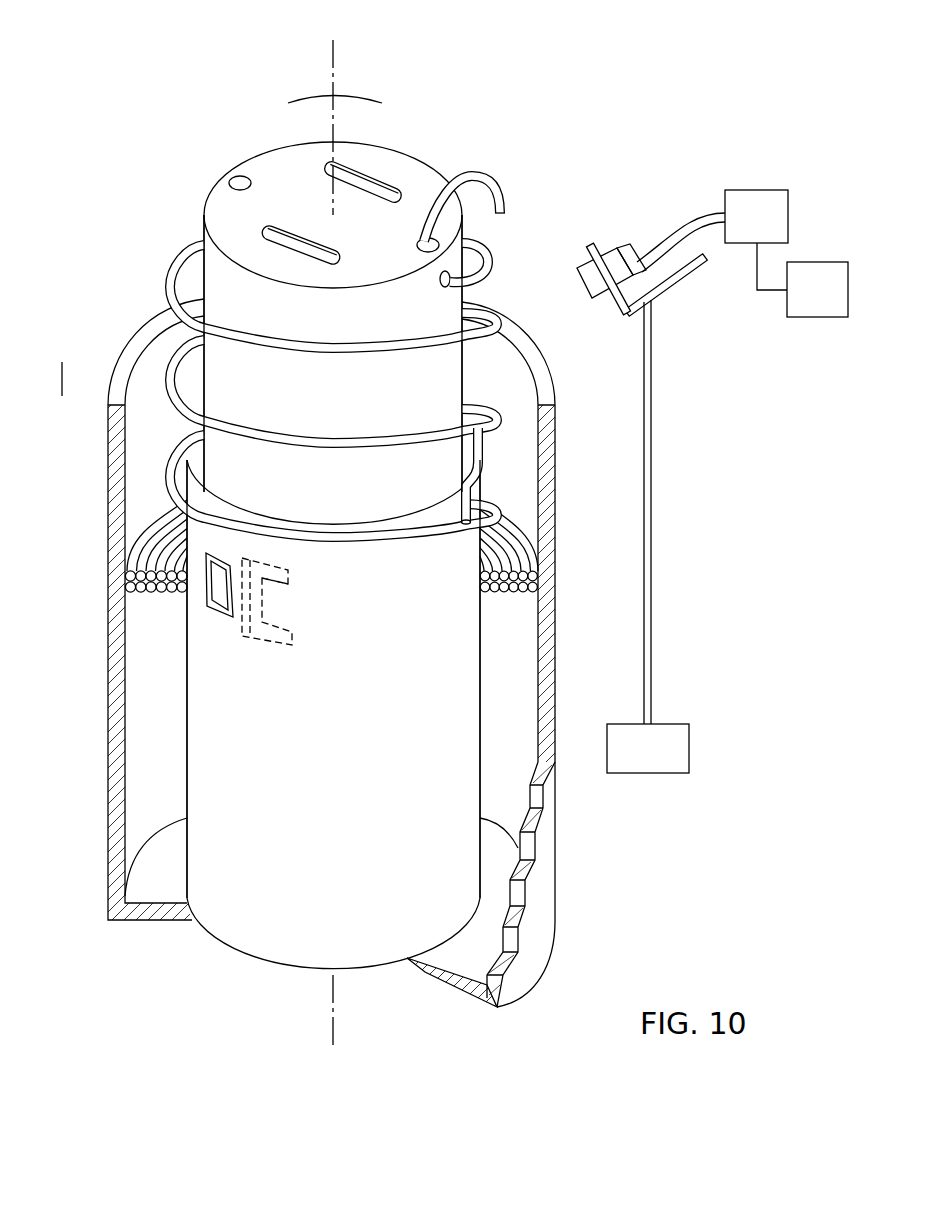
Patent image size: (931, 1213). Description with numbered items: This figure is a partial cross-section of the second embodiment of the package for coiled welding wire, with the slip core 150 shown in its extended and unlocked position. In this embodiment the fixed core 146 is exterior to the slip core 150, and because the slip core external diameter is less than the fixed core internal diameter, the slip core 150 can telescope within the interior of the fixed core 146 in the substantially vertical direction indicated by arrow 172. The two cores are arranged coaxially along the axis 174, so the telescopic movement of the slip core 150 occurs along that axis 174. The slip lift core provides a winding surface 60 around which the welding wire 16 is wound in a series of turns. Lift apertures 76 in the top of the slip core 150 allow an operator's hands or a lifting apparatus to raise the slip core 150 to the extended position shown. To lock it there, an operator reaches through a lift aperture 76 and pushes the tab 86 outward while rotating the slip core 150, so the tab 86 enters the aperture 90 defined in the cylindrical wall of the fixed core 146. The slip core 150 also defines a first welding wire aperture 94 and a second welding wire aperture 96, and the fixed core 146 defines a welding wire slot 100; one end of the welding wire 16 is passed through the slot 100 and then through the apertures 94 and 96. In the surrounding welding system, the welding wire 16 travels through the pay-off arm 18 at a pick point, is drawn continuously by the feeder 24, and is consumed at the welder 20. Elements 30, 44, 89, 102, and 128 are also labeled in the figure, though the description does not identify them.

The welding wire 16 is at (500, 526).
The pay-off arm 18 is at (592, 244).
The welder 20 is at (828, 262).
The feeder 24 is at (778, 190).
The outer vessel 30 is at (140, 336).
The vessel bottom plate 44 is at (460, 963).
The winding surface 60 is at (480, 625).
The lift apertures 76 is at (388, 180).
The tab 86 is at (282, 615).
The clip opening 89 is at (290, 576).
The aperture 90 is at (218, 617).
The first welding wire aperture 94 is at (232, 175).
The second welding wire aperture 96 is at (440, 297).
The welding wire slot 100 is at (452, 493).
The inlet tube 102 is at (484, 172).
The rotation direction 128 is at (356, 100).
The fixed core 146 is at (295, 962).
The slip core 150 is at (332, 320).
The arrow 172 is at (84, 374).
The axis 174 is at (333, 78).